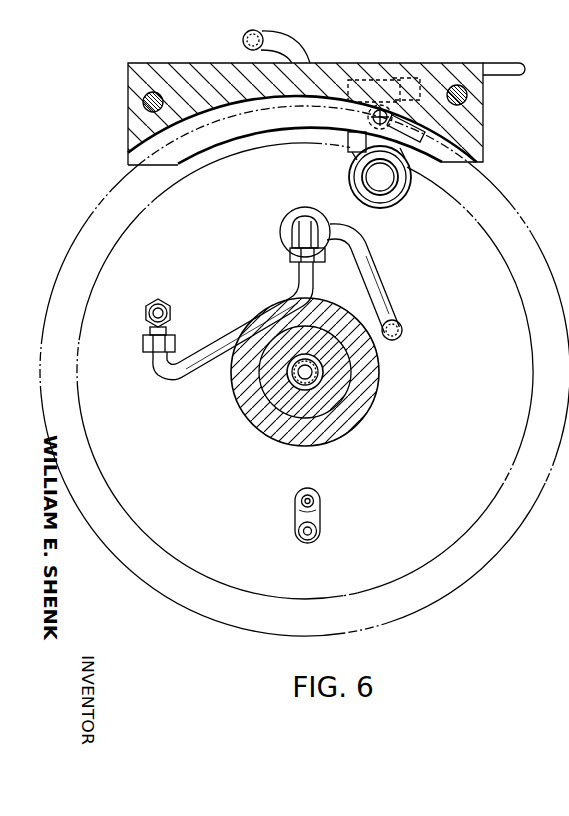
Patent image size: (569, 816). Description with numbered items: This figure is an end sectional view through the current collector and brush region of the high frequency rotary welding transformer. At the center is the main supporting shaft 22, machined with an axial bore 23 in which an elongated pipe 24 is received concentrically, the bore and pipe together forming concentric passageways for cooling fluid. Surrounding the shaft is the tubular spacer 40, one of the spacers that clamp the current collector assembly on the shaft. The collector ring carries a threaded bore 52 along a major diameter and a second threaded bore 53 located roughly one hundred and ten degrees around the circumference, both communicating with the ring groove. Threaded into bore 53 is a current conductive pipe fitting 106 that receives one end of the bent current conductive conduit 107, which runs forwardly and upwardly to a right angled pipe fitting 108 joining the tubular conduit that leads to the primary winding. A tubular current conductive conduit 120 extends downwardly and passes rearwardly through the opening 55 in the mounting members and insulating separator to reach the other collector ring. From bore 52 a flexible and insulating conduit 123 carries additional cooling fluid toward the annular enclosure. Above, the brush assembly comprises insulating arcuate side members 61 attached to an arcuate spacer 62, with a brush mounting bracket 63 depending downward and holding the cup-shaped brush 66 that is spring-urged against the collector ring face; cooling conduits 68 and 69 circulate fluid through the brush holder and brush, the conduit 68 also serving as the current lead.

The main supporting shaft 22 is at (329, 382).
The axial bore 23 is at (265, 406).
The pipe 24 is at (313, 385).
The tubular spacer 40 is at (370, 359).
The threaded bore 52 is at (320, 514).
The threaded bore 53 is at (145, 308).
The opening 55 is at (403, 330).
The arcuate side member 61 is at (127, 163).
The arcuate spacer 62 is at (200, 70).
The brush mounting bracket 63 is at (396, 204).
The cup-shaped brush 66 is at (388, 175).
The conduit 68 is at (505, 66).
The conduit 69 is at (288, 45).
The pipe fitting 106 is at (163, 303).
The conduit 107 is at (233, 334).
The right angled pipe fitting 108 is at (300, 232).
The tubular current conductive conduit 120 is at (372, 264).
The flexible and insulating conduit 123 is at (297, 537).